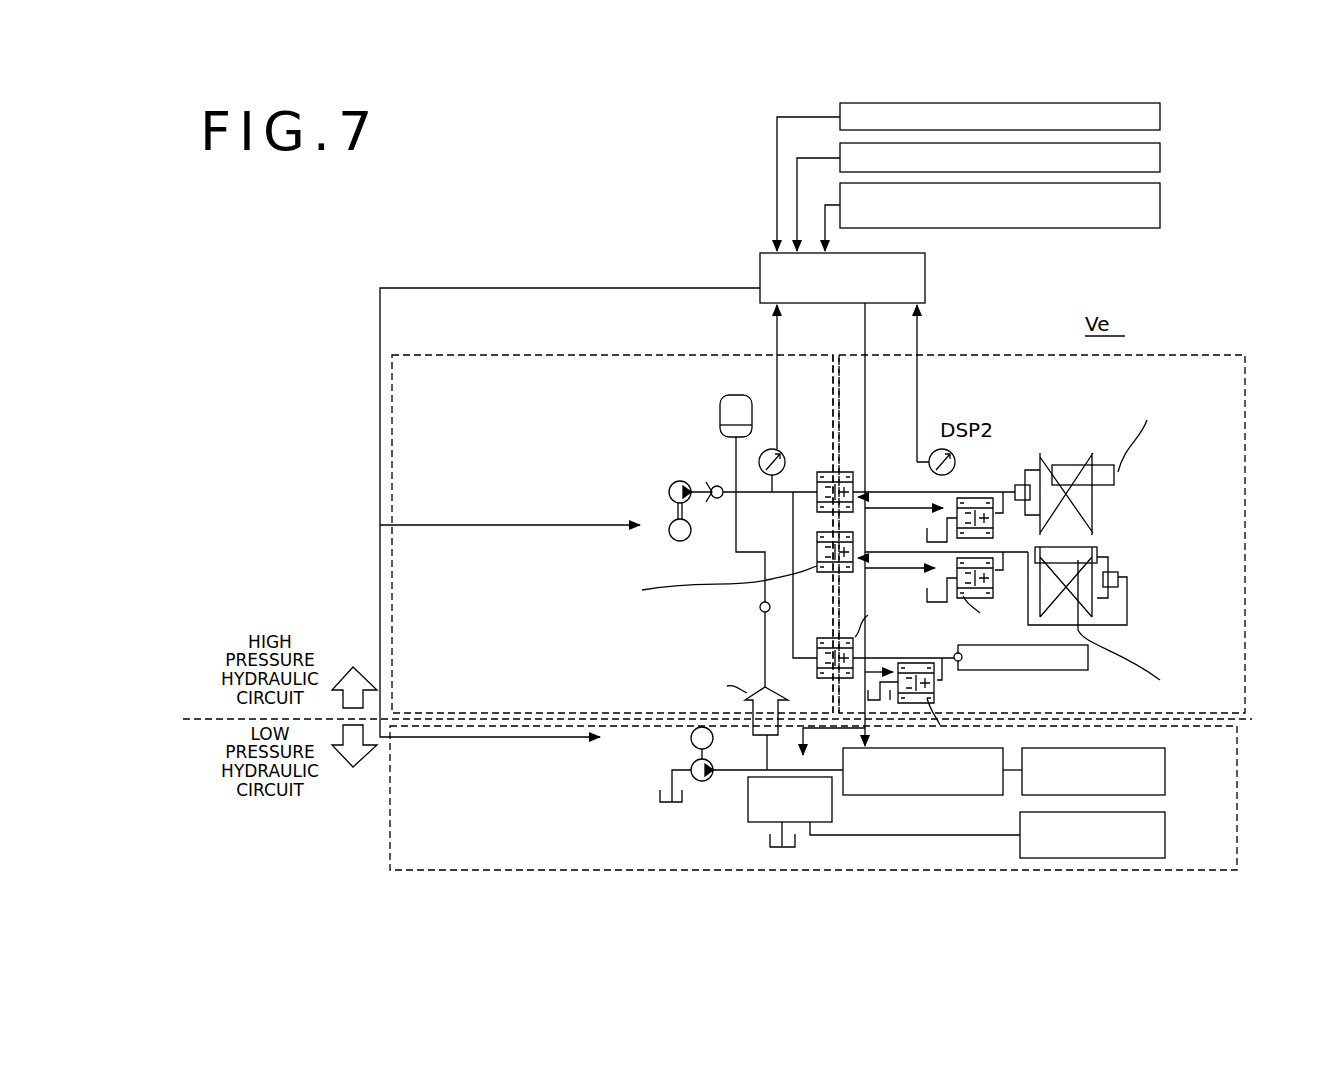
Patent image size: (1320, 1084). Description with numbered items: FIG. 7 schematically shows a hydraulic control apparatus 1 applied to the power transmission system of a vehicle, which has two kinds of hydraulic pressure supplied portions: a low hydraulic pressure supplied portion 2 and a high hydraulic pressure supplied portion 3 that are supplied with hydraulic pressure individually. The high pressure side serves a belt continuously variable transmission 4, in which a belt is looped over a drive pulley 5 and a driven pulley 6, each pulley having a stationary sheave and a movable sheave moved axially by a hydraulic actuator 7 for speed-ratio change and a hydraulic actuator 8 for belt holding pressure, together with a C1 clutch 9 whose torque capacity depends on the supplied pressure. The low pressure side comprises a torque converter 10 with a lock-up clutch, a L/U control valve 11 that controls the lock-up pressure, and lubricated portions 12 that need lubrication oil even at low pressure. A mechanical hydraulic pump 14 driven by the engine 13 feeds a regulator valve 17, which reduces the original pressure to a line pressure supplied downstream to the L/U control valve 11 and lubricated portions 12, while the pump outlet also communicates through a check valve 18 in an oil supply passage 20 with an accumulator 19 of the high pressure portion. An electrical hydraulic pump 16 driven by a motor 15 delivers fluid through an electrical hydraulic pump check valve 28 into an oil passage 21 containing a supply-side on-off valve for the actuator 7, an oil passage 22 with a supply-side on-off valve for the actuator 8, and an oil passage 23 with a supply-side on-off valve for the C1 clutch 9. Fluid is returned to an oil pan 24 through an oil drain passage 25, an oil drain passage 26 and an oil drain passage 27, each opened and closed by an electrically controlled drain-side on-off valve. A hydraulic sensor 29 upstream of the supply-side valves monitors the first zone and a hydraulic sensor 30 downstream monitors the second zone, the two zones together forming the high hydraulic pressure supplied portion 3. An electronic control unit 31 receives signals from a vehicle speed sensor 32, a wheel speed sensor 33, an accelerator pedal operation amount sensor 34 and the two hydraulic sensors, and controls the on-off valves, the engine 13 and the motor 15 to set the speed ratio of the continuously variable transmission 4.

The hydraulic control apparatus 1 is at (1018, 290).
The low hydraulic pressure supplied portion 2 is at (372, 831).
The high hydraulic pressure supplied portion 3 is at (372, 570).
The continuously variable transmission 4 is at (1107, 548).
The drive pulley 5 is at (1065, 460).
The driven pulley 6 is at (1105, 542).
The hydraulic actuator 7 is at (1025, 487).
The hydraulic actuator 8 is at (1118, 578).
The C1 clutch 9 is at (1033, 670).
The torque converter 10 is at (1167, 772).
The L/U control valve 11 is at (930, 797).
The lubricated portions 12 is at (1167, 838).
The engine 13 is at (713, 742).
The mechanical hydraulic pump 14 is at (710, 779).
The motor 15 is at (690, 539).
The electrical hydraulic pump 16 is at (669, 485).
The regulator valve 17 is at (833, 805).
The check valve 18 is at (758, 606).
The accumulator 19 is at (735, 395).
The oil supply passage 20 is at (760, 632).
The oil passage 21 is at (817, 474).
The oil passage 22 is at (830, 532).
The oil passage 23 is at (886, 640).
The oil pan 24 is at (926, 535).
The oil drain passage 25 is at (994, 526).
The oil drain passage 26 is at (993, 600).
The oil drain passage 27 is at (937, 678).
The electrical hydraulic pump check valve 28 is at (716, 485).
The hydraulic sensor 29 is at (780, 452).
The hydraulic sensor 30 is at (941, 449).
The electronic control unit 31 is at (927, 272).
The vehicle speed sensor 32 is at (1162, 117).
The wheel speed sensor 33 is at (1162, 158).
The accelerator pedal operation amount sensor 34 is at (1162, 205).